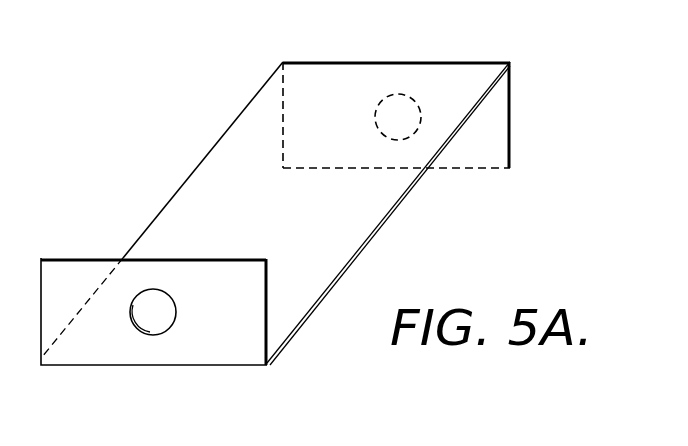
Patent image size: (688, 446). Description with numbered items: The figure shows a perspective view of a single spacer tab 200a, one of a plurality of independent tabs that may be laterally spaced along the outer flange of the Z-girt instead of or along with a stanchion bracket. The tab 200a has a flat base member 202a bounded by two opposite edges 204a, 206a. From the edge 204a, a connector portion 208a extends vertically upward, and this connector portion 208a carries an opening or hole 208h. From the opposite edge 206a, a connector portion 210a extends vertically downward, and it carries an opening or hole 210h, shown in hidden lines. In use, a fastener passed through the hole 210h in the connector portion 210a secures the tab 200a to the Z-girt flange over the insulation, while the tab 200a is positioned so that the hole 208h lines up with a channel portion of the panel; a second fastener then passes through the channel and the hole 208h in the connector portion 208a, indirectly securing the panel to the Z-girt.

The tab 200a is at (221, 50).
The base member 202a is at (197, 183).
The edge 204a is at (230, 367).
The edge 206a is at (489, 61).
The connector portion 208a is at (73, 358).
The hole 208h is at (151, 333).
The connector portion 210a is at (474, 164).
The hole 210h is at (402, 96).